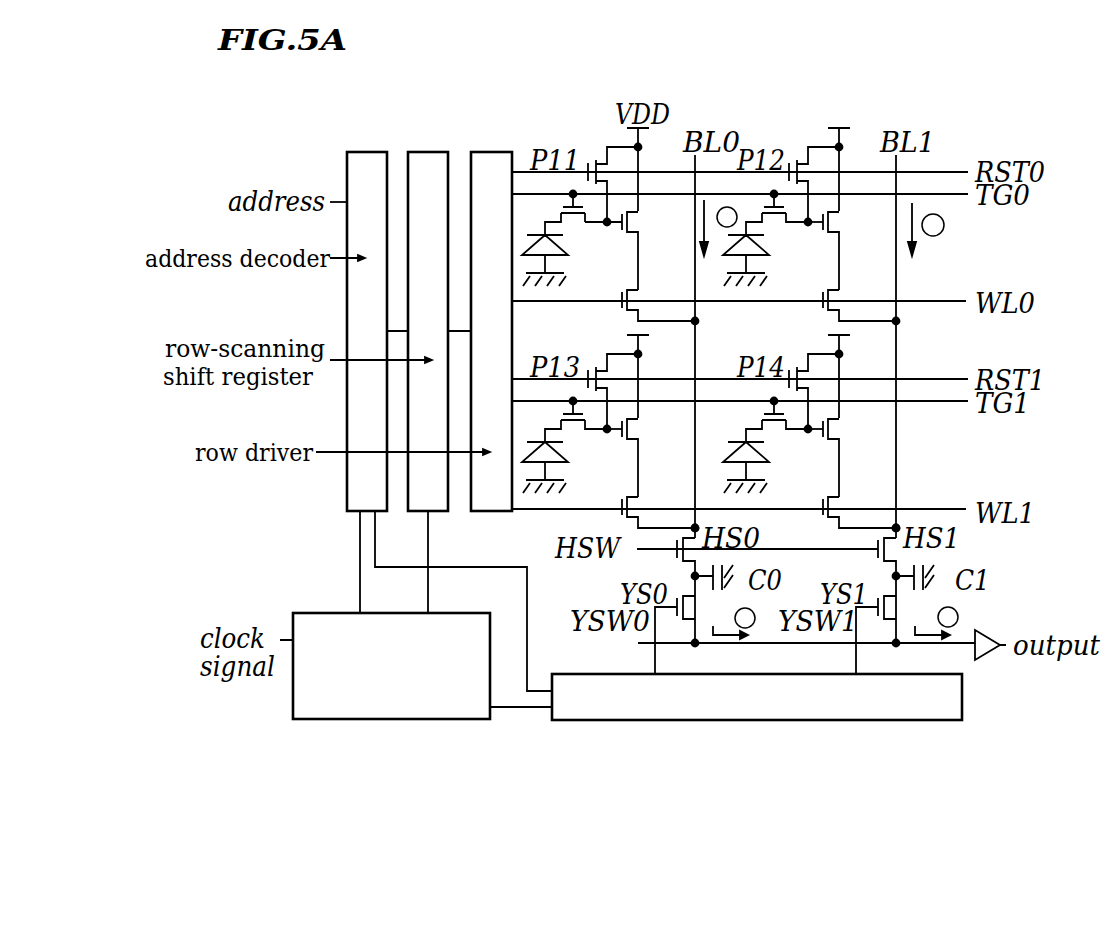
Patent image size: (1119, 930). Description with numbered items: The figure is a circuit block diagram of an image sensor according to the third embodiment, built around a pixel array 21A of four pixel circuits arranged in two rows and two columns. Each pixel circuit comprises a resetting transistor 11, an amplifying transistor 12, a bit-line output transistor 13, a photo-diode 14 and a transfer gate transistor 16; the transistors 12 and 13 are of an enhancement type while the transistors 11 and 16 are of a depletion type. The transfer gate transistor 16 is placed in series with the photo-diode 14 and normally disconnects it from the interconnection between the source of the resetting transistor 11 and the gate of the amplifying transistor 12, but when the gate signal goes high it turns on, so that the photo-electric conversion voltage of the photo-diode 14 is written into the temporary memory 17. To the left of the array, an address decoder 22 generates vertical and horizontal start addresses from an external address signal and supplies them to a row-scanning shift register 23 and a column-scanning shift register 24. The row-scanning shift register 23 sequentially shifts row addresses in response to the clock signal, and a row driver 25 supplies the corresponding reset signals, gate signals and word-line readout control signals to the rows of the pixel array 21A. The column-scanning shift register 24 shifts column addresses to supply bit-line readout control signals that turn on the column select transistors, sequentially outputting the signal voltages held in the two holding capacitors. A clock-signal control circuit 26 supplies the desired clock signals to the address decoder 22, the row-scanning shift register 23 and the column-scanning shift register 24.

The resetting transistor 11 is at (604, 162).
The amplifying transistor 12 is at (656, 250).
The bit-line output transistor 13 is at (660, 300).
The photo-diode 14 is at (562, 291).
The transfer gate transistor 16 is at (586, 242).
The temporary memory 17 is at (638, 249).
The pixel array 21A is at (759, 360).
The address decoder 22 is at (378, 300).
The row-scanning shift register 23 is at (441, 300).
The column-scanning shift register 24 is at (757, 731).
The row driver 25 is at (500, 300).
The clock-signal control circuit 26 is at (391, 700).